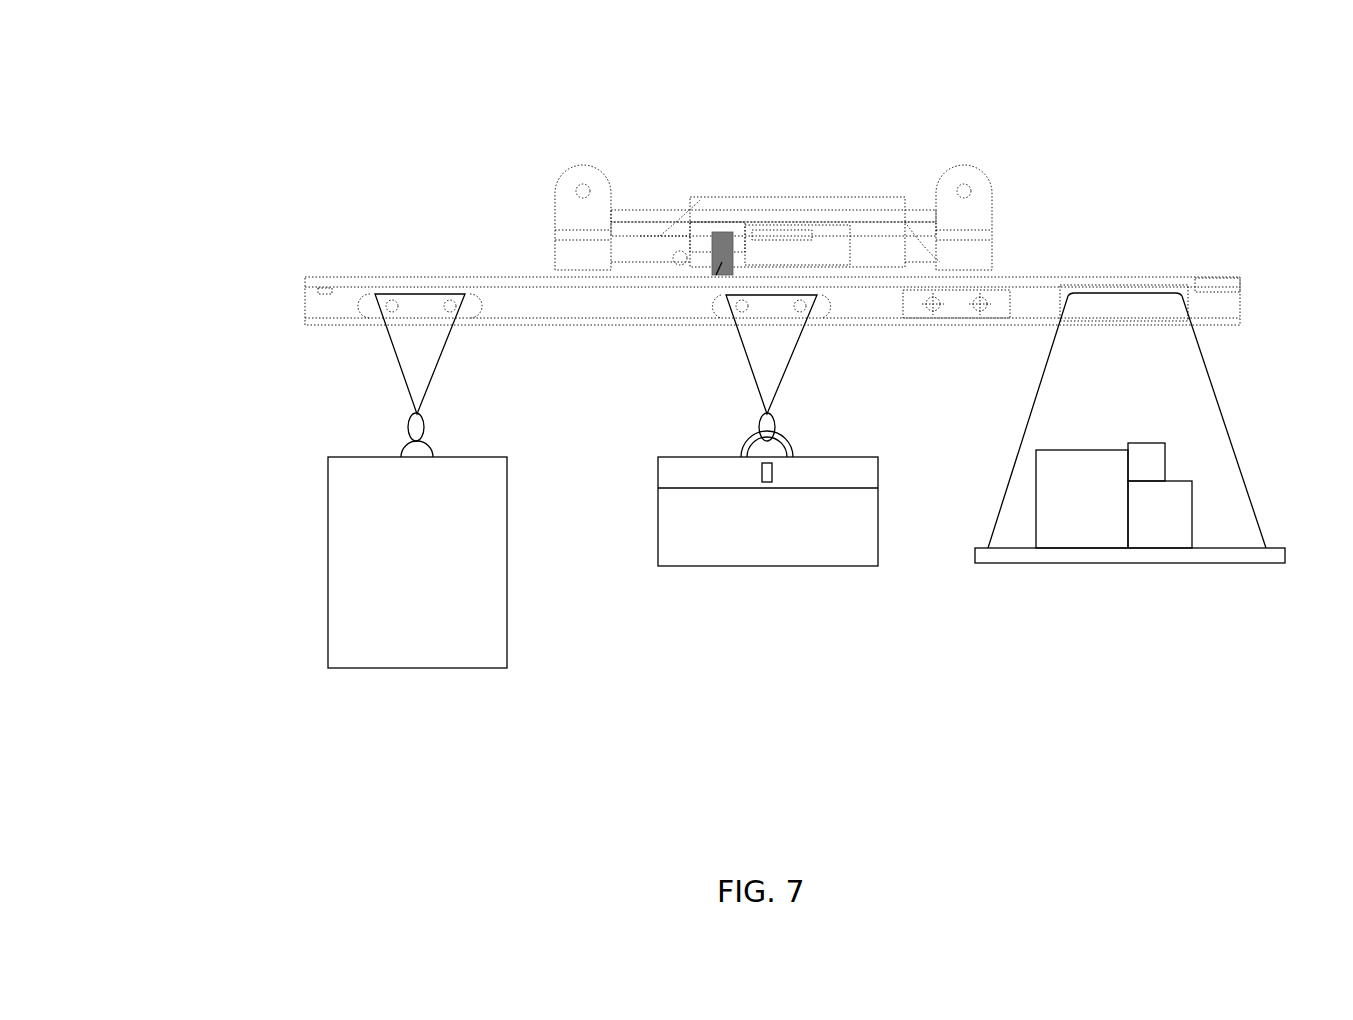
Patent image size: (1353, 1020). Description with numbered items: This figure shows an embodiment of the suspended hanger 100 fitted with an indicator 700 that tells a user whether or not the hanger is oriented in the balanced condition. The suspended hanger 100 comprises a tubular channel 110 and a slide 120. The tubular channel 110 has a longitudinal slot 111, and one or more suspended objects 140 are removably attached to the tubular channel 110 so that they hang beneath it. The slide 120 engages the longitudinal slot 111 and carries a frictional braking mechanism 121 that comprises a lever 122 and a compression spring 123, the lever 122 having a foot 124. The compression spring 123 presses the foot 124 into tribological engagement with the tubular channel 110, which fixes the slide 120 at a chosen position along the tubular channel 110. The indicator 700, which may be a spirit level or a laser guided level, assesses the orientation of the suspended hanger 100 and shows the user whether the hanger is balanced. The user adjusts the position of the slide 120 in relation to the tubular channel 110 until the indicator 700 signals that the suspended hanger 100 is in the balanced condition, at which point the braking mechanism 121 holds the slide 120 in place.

The suspended hanger 100 is at (292, 100).
The tubular channel 110 is at (553, 350).
The longitudinal slot 111 is at (1207, 278).
The slide 120 is at (867, 200).
The frictional braking mechanism 121 is at (743, 200).
The lever 122 is at (757, 243).
The compression spring 123 is at (712, 246).
The foot 124 is at (714, 276).
The suspended objects 140 is at (434, 574).
The indicator 700 is at (942, 314).